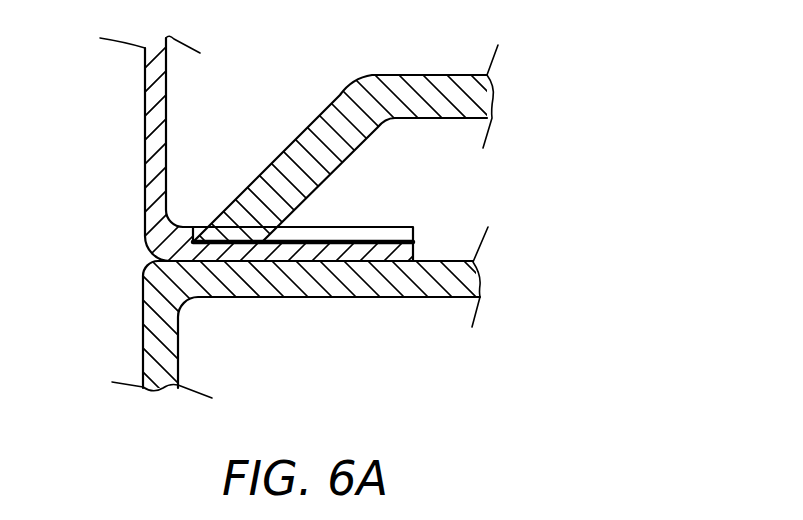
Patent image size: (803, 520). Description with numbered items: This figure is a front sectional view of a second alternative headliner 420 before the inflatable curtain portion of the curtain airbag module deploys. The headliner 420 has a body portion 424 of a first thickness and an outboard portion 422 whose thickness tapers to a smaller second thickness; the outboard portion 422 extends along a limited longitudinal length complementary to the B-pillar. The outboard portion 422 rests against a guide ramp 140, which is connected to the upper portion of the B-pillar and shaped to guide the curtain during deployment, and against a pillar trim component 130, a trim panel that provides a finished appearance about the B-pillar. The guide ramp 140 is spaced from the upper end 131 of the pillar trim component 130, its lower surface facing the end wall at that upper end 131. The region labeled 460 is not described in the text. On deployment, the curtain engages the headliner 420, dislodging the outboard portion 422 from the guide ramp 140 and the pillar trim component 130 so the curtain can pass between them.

The guide ramp 140 is at (422, 68).
The second alternative headliner 420 is at (127, 98).
The body portion 424 is at (145, 160).
The bend of bracket 460 is at (132, 249).
The outboard portion 422 is at (384, 250).
The pillar trim component 130 is at (137, 328).
The upper end 131 is at (150, 264).